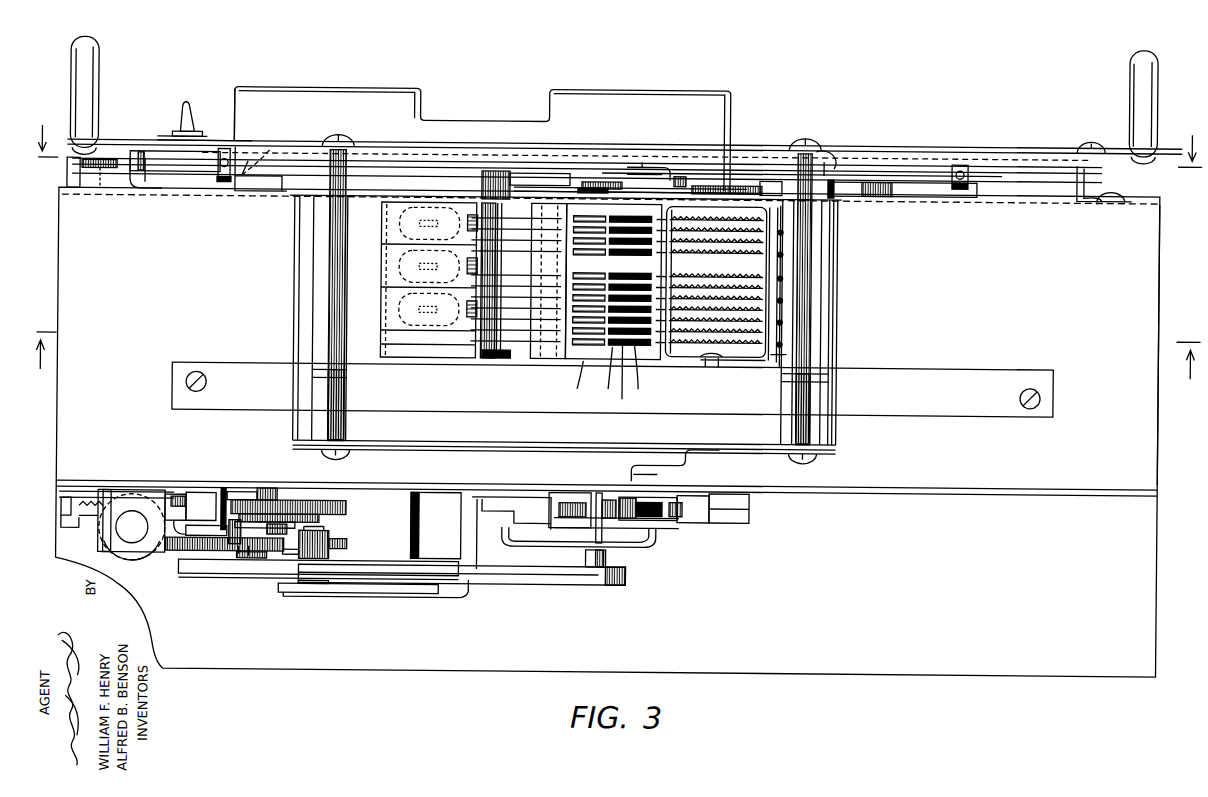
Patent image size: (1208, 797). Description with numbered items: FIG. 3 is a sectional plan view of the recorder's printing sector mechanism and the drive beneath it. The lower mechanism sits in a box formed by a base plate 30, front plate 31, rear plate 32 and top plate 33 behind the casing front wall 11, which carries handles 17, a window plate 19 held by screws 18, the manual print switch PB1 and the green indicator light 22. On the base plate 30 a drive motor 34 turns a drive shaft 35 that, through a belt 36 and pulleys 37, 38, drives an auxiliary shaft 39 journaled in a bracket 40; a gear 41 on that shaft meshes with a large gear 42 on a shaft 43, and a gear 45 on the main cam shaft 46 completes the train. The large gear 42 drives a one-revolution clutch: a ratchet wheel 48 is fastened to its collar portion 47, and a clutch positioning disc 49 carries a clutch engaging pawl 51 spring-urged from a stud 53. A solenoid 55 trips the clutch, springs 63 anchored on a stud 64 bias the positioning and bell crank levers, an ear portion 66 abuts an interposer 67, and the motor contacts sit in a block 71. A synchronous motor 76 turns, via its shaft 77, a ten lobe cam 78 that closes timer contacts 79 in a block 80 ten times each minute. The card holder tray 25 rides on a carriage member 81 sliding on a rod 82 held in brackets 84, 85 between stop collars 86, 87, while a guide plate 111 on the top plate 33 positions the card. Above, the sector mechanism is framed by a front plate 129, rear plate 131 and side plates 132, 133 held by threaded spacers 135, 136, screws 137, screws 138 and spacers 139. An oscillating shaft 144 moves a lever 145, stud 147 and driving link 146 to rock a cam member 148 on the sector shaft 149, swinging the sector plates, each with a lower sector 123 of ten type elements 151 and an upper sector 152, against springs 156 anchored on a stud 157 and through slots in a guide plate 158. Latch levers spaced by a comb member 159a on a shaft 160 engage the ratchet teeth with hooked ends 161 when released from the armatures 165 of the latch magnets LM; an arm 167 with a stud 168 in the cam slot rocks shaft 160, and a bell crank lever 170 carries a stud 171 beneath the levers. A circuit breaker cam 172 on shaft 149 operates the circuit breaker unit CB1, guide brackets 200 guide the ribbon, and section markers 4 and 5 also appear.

The front wall 11 is at (1108, 152).
The handles 17 is at (96, 62).
The screws 18 is at (1082, 137).
The window plate 19 is at (905, 163).
The indicator light 22 is at (230, 132).
The card holder tray 25 is at (728, 97).
The base plate 30 is at (1158, 602).
The front plate 31 is at (972, 203).
The rear plate 32 is at (918, 491).
The top plate 33 is at (1158, 255).
The drive motor 34 is at (660, 543).
The drive shaft 35 is at (609, 556).
The belt 36 is at (535, 584).
The pulley 37 is at (276, 579).
The pulley 38 is at (622, 587).
The auxiliary shaft 39 is at (340, 595).
The bracket 40 is at (428, 601).
The gear 41 is at (350, 557).
The large gear 42 is at (350, 546).
The shaft 43 is at (248, 561).
The gear 45 is at (305, 503).
The main cam shaft 46 is at (265, 491).
The collar portion 47 is at (215, 553).
The ratchet wheel 48 is at (296, 527).
The clutch positioning disc 49 is at (320, 515).
The clutch engaging pawl 51 is at (190, 516).
The stud 53 is at (248, 536).
The solenoid 55 is at (133, 548).
The springs 63 is at (110, 493).
The stud 64 is at (62, 491).
The extended ear portion 66 is at (60, 512).
The interposer 67 is at (68, 532).
The block 71 is at (226, 491).
The synchronous motor 76 is at (493, 512).
The shaft 77 is at (598, 495).
The ten lobe cam 78 is at (560, 496).
The timer contacts 79 is at (634, 503).
The block 80 is at (735, 524).
The carriage member 81 is at (265, 140).
The rod 82 is at (845, 166).
The bracket 84 is at (152, 194).
The bracket 85 is at (1068, 187).
The stop collar 86 is at (222, 185).
The stop collar 87 is at (962, 162).
The guide plate 111 is at (1000, 413).
The lower sector 123 is at (650, 373).
The front plate 129 is at (372, 206).
The rear plate 131 is at (530, 452).
The side plate 132 is at (290, 426).
The side plate 133 is at (836, 242).
The threaded spacers 135 is at (310, 263).
The threaded spacers 136 is at (346, 426).
The screws 137 is at (348, 456).
The screws 138 is at (342, 144).
The threaded spacers 139 is at (816, 148).
The shaft 144 is at (100, 164).
The lever 145 is at (112, 174).
The driving link 146 is at (282, 192).
The stud 147 is at (72, 192).
The cam member 148 is at (594, 182).
The sector shaft 149 is at (652, 261).
The type elements 151 is at (605, 374).
The upper sectors 152 is at (781, 305).
The springs 156 is at (735, 366).
The stud 157 is at (772, 363).
The guide plate 158 is at (670, 263).
The comb member 159a is at (571, 388).
The shaft 160 is at (494, 363).
The hooked end 161 is at (625, 380).
The armatures 165 is at (382, 335).
The arm 167 is at (520, 174).
The stud 168 is at (585, 192).
The bell crank lever 170 is at (505, 363).
The stud 171 is at (560, 361).
The circuit breaker cam 172 is at (752, 182).
The guide brackets 200 is at (627, 170).
The section line 4 is at (616, 346).
The section line 5 is at (618, 160).
The circuit breaker unit CB1 is at (836, 196).
The latch magnets LM is at (412, 321).
The manual print switch PB1 is at (187, 108).